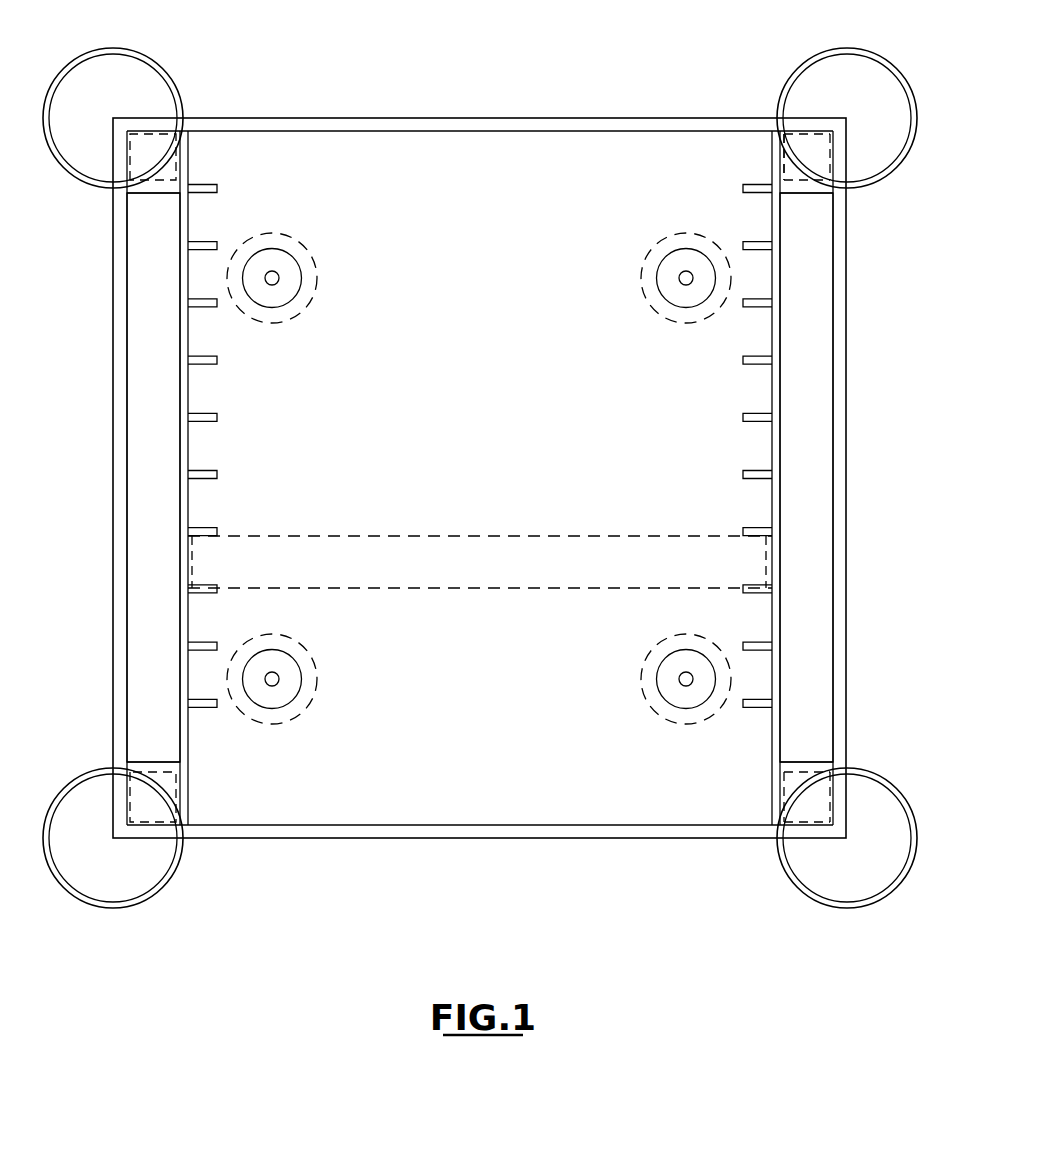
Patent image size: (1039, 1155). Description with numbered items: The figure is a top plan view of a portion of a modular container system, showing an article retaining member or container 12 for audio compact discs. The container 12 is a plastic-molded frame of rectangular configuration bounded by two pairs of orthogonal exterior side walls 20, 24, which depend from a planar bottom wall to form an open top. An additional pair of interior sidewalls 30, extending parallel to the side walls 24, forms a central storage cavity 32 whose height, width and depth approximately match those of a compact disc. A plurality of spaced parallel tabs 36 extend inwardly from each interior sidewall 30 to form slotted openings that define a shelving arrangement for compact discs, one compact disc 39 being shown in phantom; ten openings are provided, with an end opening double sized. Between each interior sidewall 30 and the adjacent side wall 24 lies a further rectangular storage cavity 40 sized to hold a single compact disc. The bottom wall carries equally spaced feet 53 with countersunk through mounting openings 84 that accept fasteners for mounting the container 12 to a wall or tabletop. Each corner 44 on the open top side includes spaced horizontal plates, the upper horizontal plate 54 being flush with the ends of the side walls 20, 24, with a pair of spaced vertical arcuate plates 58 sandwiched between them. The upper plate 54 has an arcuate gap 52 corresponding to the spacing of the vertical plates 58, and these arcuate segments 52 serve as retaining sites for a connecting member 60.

The article retaining member 12 is at (376, 106).
The side walls 20 is at (596, 115).
The side walls 24 is at (113, 403).
The interior sidewalls 30 is at (178, 502).
The storage cavity 32 is at (402, 165).
The tabs 36 is at (773, 533).
The compact disc 39 is at (247, 578).
The storage cavities 40 is at (137, 587).
The corners 44 is at (153, 140).
The arcuate gap 52 is at (808, 178).
The feet 53 is at (697, 238).
The upper horizontal plate 54 is at (800, 132).
The vertical arcuate plates 58 is at (147, 184).
The connecting member 60 is at (100, 44).
The mounting openings 84 is at (665, 260).